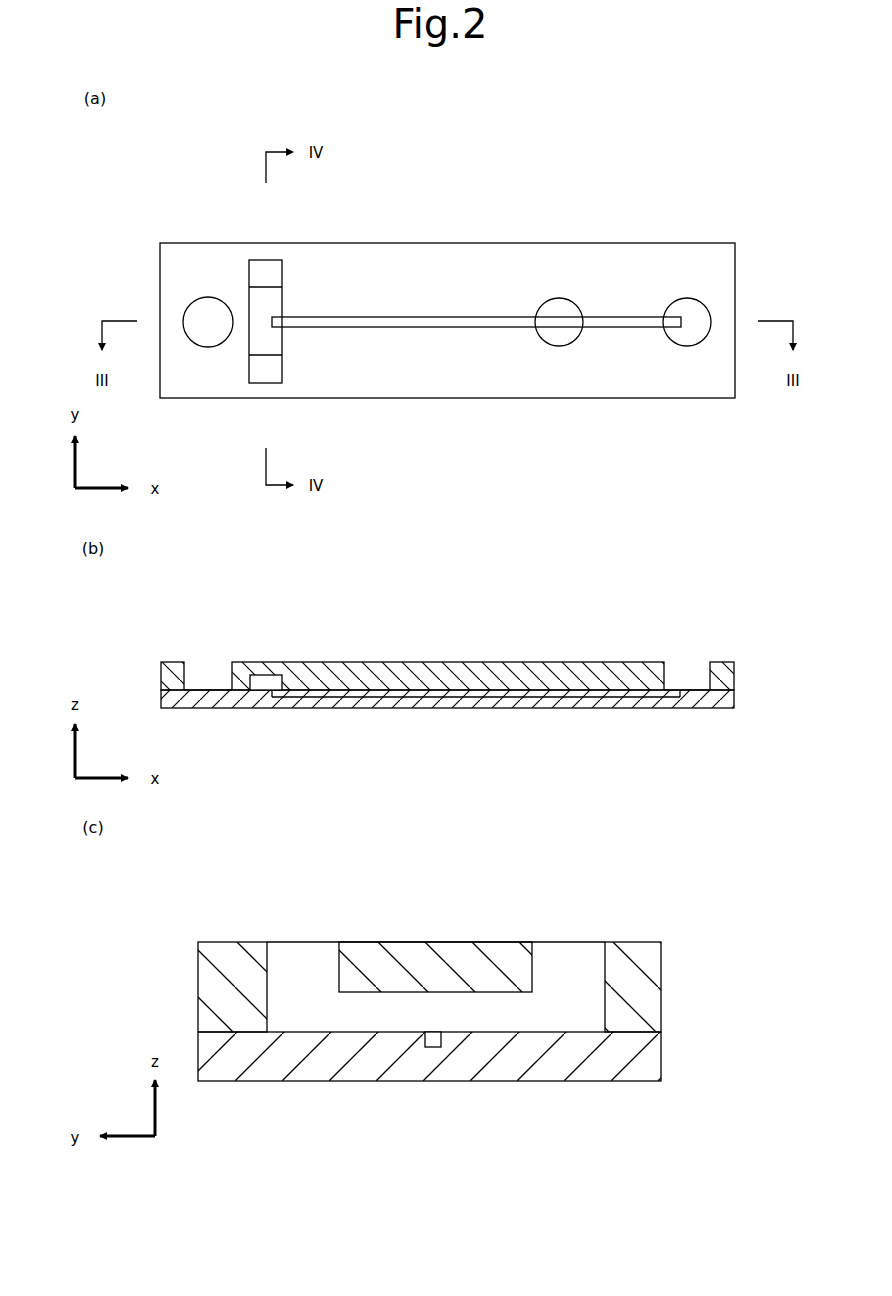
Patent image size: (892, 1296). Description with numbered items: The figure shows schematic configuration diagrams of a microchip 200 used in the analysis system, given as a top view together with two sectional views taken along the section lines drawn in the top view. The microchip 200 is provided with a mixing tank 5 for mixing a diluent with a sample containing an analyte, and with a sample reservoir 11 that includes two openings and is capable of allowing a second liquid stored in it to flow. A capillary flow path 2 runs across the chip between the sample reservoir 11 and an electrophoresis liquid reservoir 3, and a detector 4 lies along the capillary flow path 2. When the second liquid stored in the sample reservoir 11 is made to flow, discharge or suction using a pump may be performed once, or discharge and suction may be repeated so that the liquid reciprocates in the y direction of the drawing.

The microchip 200 is at (160, 232).
The capillary flow path 2 is at (455, 330).
The electrophoresis liquid reservoir 3 is at (685, 313).
The detector 4 is at (559, 346).
The mixing tank 5 is at (204, 306).
The sample reservoir 11 is at (285, 297).